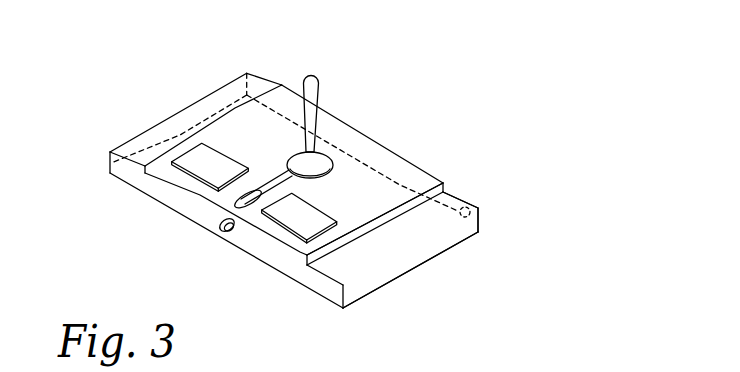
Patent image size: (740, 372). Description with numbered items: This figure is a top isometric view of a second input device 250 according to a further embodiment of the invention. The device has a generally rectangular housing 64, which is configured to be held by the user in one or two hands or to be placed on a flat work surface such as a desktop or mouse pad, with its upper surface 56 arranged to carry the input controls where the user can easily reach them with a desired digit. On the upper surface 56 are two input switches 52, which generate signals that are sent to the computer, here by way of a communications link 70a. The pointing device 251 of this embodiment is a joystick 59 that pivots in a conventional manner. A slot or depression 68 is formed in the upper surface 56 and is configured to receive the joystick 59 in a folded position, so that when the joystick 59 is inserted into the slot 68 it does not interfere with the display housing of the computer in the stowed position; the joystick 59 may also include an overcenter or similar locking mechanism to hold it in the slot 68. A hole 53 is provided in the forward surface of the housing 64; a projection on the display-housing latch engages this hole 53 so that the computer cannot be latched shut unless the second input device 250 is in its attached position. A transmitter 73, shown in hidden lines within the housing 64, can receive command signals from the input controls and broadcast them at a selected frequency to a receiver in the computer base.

The second input device 250 is at (408, 116).
The pointing device 251 is at (292, 81).
The upper surface 56 is at (385, 185).
The housing 64 is at (355, 230).
The housing base 70a is at (499, 186).
The transmitter 73 is at (480, 213).
The input switches 52 is at (200, 168).
The hole 53 is at (223, 233).
The joystick 59 is at (322, 126).
The slot 68 is at (258, 190).